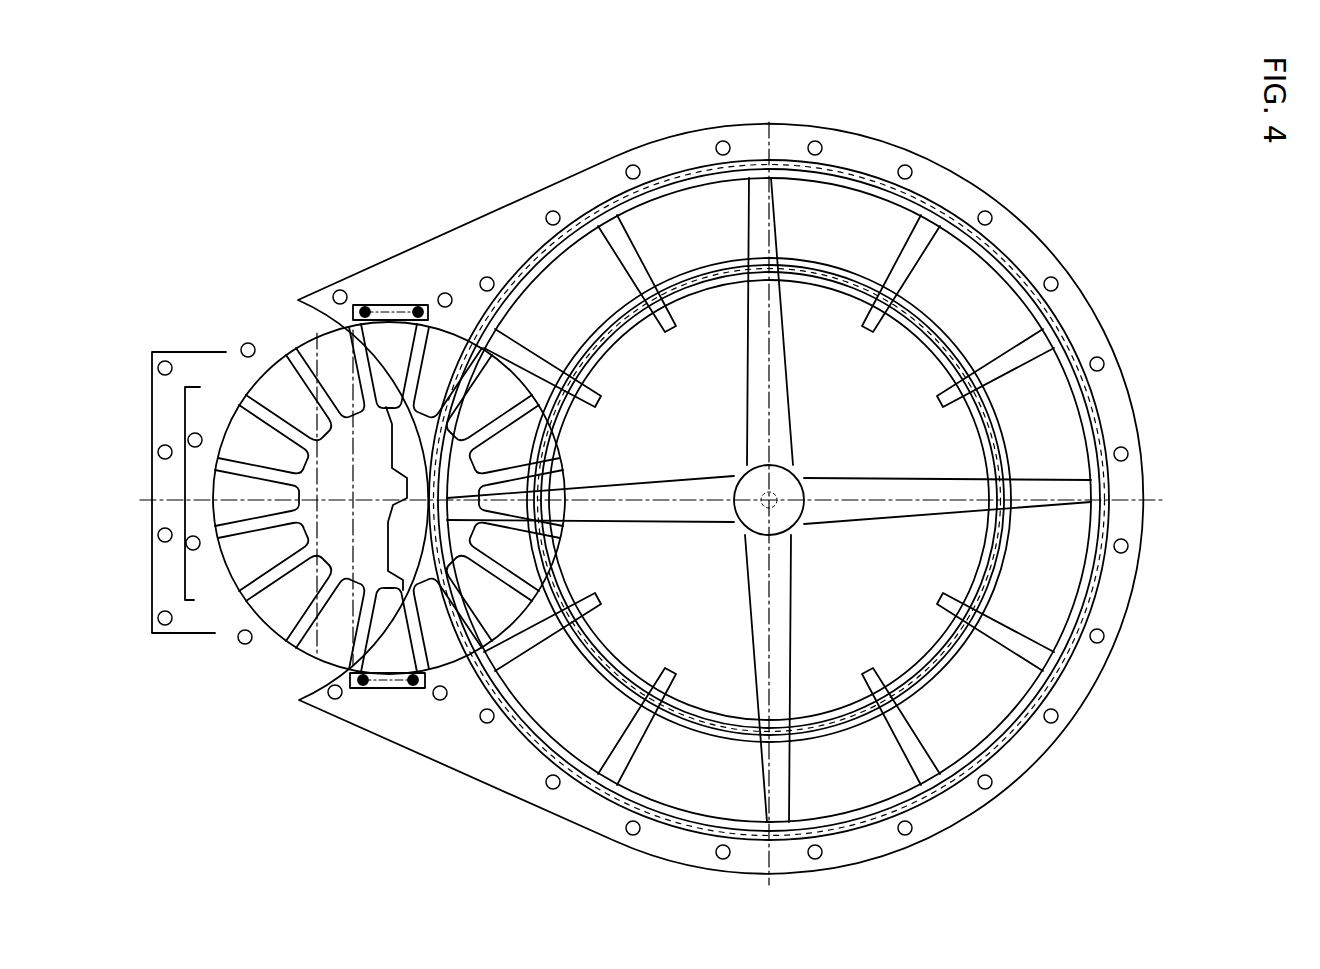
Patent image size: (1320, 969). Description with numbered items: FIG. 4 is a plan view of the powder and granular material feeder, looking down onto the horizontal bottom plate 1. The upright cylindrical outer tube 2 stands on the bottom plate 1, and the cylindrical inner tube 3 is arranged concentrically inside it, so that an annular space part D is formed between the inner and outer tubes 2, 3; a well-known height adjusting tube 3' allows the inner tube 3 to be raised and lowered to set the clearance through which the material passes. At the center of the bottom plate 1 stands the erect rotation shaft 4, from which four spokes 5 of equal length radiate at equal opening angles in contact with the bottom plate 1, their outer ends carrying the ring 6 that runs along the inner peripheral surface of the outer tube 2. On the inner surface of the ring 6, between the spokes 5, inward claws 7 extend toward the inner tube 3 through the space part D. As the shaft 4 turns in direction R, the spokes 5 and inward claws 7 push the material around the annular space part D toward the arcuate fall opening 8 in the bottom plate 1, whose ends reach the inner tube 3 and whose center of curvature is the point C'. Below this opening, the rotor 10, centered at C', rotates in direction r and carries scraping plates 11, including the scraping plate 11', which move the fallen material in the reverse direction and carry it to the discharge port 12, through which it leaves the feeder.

The horizontal bottom plate 1 is at (690, 415).
The outer tube 2 is at (612, 192).
The inner tube 3 is at (681, 335).
The height adjusting tube 3' is at (701, 308).
The rotation shaft 4 is at (775, 506).
The spokes 5 is at (777, 245).
The ring 6 is at (553, 268).
The inward claws 7 is at (627, 267).
The fall opening 8 is at (553, 580).
The rotor 10 is at (386, 488).
The scraping plates 11 is at (516, 538).
The cell 11' is at (483, 589).
The discharge port 12 is at (250, 540).
The space part D is at (568, 306).
The rotating direction of the rotation shaft R is at (655, 455).
The center of curvature of the fall opening C' is at (419, 461).
The rotating direction of the rotor r is at (330, 470).